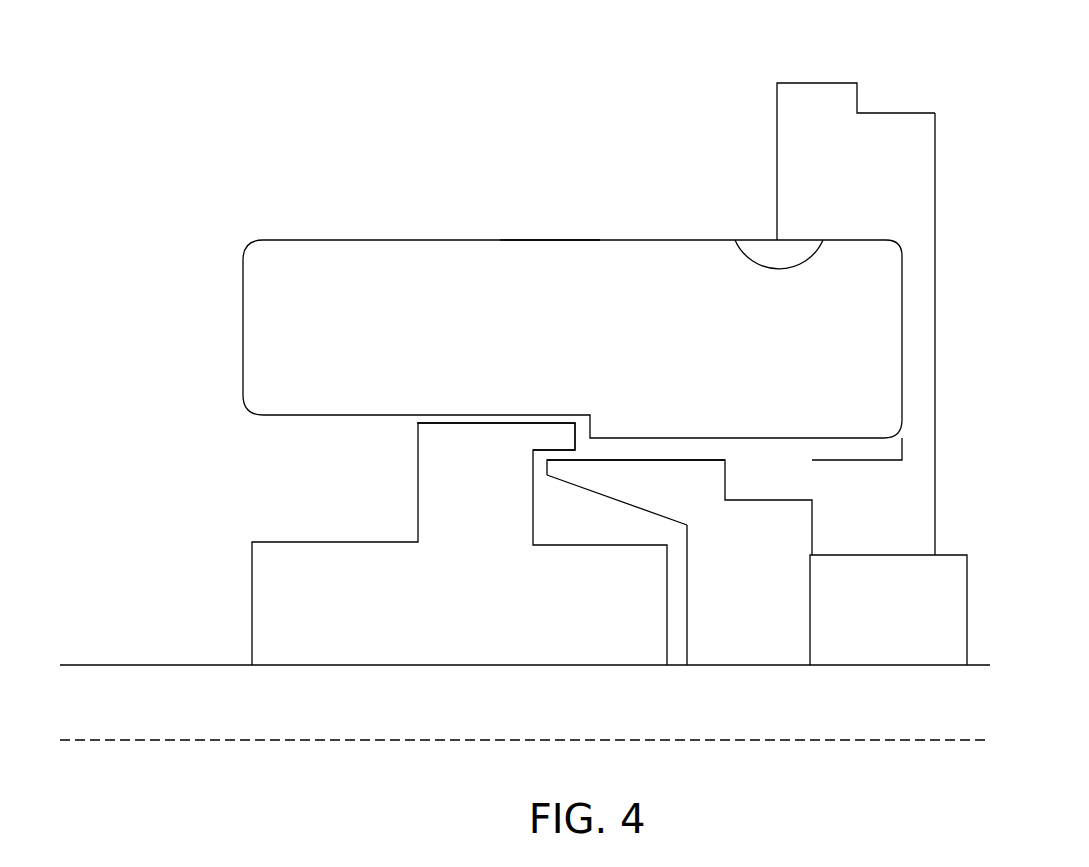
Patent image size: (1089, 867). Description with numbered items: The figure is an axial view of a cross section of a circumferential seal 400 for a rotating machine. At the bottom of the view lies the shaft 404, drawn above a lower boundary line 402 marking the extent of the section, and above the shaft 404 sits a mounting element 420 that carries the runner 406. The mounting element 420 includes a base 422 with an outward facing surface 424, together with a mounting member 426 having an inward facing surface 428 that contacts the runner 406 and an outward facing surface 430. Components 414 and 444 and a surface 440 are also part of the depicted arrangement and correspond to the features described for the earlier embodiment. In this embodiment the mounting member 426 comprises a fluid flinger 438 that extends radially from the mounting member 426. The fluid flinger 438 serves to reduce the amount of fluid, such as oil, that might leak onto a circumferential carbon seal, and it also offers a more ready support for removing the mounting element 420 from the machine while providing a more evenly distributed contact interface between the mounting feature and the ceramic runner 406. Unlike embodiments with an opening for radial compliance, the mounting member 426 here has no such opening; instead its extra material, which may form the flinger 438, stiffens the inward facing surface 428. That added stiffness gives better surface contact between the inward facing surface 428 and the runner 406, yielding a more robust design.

The circumferential seal 400 is at (190, 147).
The substrate 402 is at (744, 740).
The shaft 404 is at (465, 708).
The runner 406 is at (497, 339).
The component 414 is at (862, 628).
The mounting element 420 is at (977, 448).
The base 422 is at (732, 585).
The outward facing surface 424 is at (667, 460).
The mounting member 426 is at (935, 227).
The inward facing surface 428 is at (737, 243).
The outward facing surface 430 is at (547, 240).
The fluid flinger 438 is at (876, 70).
The surface 440 is at (602, 495).
The component 444 is at (386, 627).